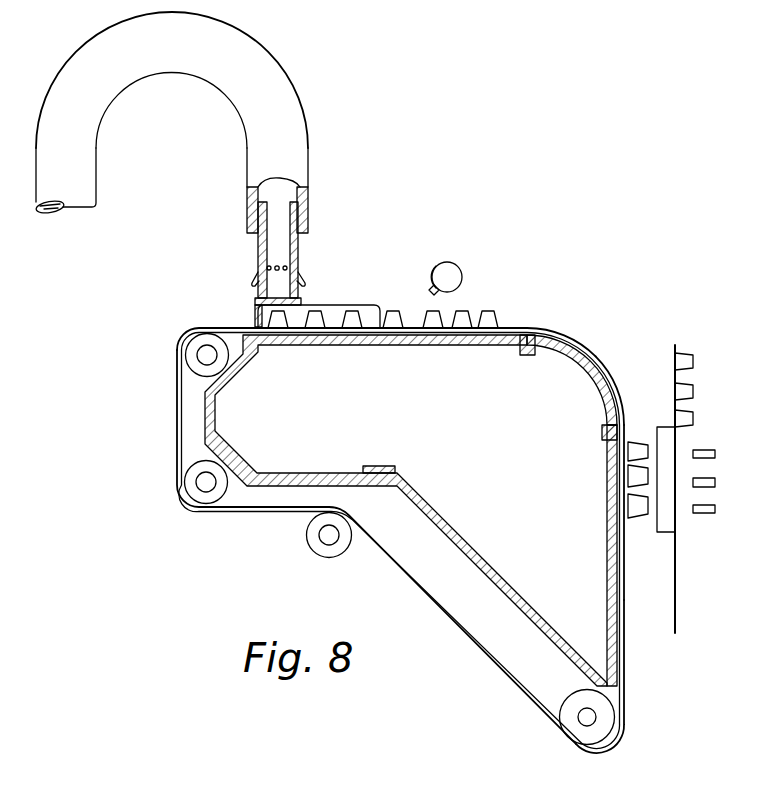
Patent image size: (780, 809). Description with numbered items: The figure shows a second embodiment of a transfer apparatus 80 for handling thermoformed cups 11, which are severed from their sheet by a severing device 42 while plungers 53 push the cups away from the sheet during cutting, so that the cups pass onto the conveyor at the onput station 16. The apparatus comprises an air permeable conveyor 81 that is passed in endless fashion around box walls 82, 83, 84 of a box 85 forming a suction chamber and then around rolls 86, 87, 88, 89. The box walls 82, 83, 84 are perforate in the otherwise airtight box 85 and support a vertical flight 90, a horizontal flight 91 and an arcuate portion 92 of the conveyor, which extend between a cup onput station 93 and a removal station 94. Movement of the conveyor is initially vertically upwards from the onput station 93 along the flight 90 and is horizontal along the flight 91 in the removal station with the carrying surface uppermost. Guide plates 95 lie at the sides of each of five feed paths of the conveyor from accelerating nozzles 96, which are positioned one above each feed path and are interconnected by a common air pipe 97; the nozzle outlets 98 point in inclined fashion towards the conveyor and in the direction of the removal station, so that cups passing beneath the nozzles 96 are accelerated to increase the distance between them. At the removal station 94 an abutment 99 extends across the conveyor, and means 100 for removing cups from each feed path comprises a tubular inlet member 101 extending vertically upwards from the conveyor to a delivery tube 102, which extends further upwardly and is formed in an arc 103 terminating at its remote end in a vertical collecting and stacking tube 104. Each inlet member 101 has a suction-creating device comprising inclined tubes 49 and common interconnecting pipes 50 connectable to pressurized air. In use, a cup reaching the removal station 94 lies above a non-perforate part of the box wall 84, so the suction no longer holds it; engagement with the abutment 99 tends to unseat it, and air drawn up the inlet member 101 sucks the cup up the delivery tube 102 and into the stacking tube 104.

The cups 11 is at (487, 311).
The onput station 16 is at (643, 528).
The severing device 42 is at (686, 443).
The tubes 49 is at (258, 270).
The common pipes 50 is at (252, 279).
The plungers 53 is at (694, 485).
The transfer apparatus 80 is at (591, 335).
The conveyor 81 is at (440, 612).
The box wall 82 is at (609, 484).
The box wall 83 is at (597, 371).
The box wall 84 is at (378, 346).
The box 85 is at (399, 541).
The roll 86 is at (192, 355).
The roll 87 is at (196, 486).
The roll 88 is at (318, 541).
The roll 89 is at (607, 722).
The flight 90 is at (623, 582).
The flight 91 is at (522, 333).
The arcuate portion 92 is at (603, 370).
The cup onput station 93 is at (632, 616).
The removal station 94 is at (277, 353).
The guide plates 95 is at (302, 310).
The accelerating nozzles 96 is at (432, 268).
The common air pipe 97 is at (461, 274).
The nozzle outlets 98 is at (430, 288).
The abutment 99 is at (256, 312).
The means for removing cups 100 is at (245, 246).
The tubular inlet member 101 is at (298, 252).
The delivery tube 102 is at (305, 211).
The arc 103 is at (174, 66).
The collecting and stacking tube 104 is at (97, 190).